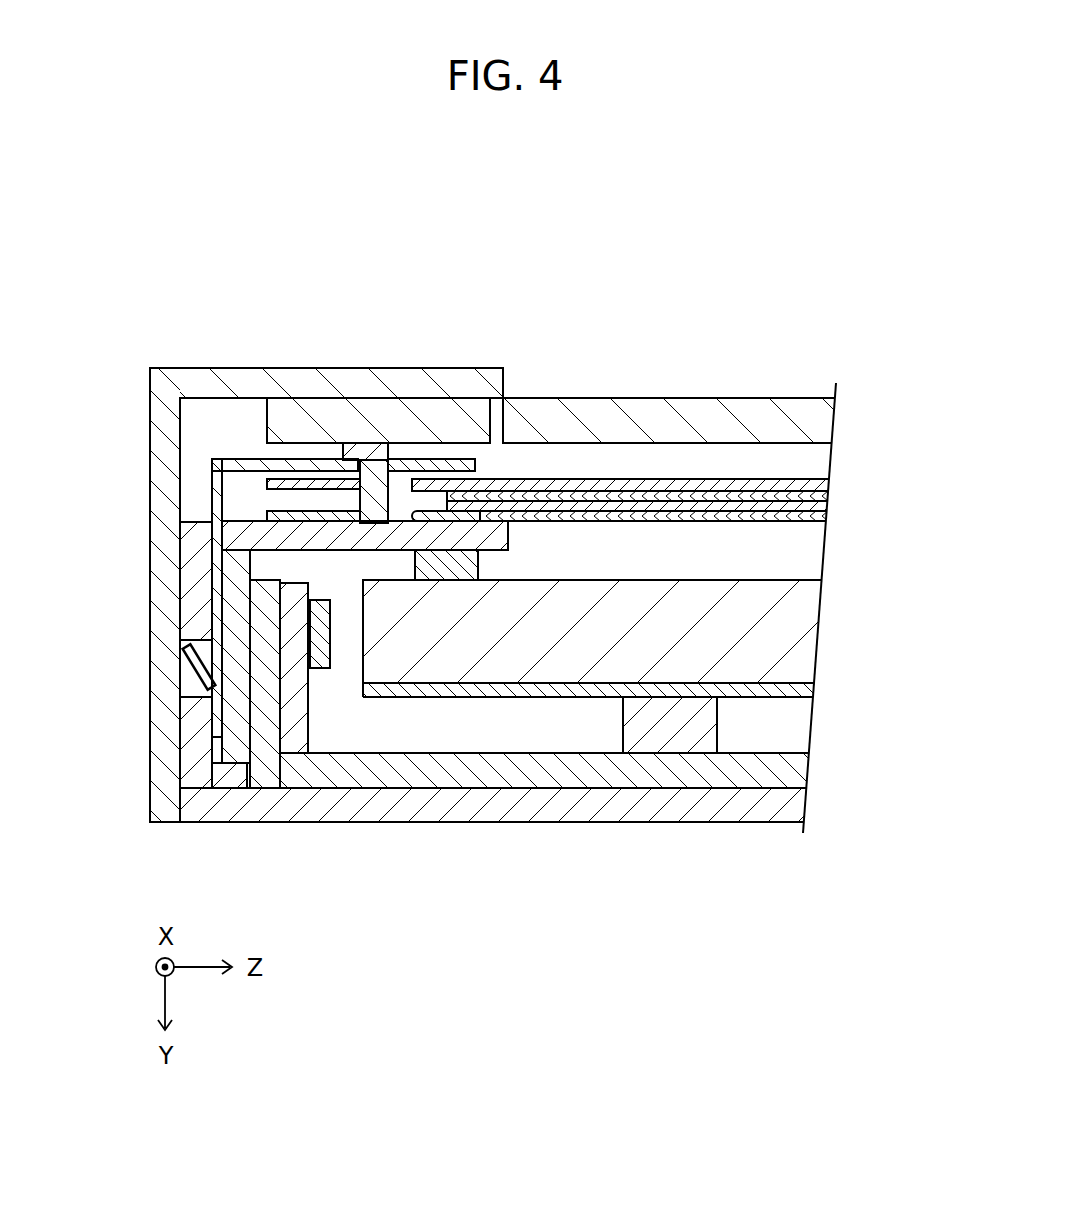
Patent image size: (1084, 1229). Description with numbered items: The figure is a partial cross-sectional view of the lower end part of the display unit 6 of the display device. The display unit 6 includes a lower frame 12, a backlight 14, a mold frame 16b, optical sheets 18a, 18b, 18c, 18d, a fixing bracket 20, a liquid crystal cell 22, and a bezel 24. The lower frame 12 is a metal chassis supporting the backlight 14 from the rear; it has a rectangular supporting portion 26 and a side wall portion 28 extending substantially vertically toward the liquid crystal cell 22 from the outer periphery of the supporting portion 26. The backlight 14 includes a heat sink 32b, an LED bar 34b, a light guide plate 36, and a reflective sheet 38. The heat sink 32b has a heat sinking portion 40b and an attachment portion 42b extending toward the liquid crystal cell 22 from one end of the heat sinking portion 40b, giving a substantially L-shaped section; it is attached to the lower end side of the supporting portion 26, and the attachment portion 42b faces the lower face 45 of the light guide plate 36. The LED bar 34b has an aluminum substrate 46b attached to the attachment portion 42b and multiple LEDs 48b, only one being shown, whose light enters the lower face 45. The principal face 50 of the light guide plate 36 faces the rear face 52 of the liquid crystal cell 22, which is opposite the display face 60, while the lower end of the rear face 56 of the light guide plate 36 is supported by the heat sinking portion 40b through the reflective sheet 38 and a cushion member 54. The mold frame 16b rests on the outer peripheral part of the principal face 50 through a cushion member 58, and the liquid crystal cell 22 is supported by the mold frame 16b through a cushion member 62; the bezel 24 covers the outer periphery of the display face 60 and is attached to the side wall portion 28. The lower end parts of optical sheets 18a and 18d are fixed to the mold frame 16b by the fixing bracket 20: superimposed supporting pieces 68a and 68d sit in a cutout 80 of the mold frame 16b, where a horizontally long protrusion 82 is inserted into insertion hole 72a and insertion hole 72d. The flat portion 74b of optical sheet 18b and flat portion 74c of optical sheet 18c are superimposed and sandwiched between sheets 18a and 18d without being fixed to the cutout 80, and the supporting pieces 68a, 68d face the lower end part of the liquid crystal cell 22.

The display unit 6 is at (693, 237).
The lower frame 12 is at (410, 805).
The backlight 14 is at (793, 723).
The mold frame 16b is at (233, 765).
The optical sheet 18a is at (757, 514).
The optical sheet 18b is at (802, 505).
The optical sheet 18c is at (800, 495).
The optical sheet 18d is at (760, 479).
The fixing bracket 20 is at (217, 493).
The liquid crystal cell 22 is at (672, 398).
The bezel 24 is at (167, 437).
The supporting portion 26 is at (567, 805).
The side wall portion 28 is at (192, 580).
The heat sink 32b is at (508, 788).
The LED bar 34b is at (292, 753).
The light guide plate 36 is at (813, 638).
The reflective sheet 38 is at (813, 692).
The heat sinking portion 40b is at (665, 788).
The attachment portion 42b is at (262, 640).
The lower face 45 is at (360, 622).
The substrate 46b is at (308, 728).
The LED 48b is at (317, 668).
The principal face 50 is at (643, 580).
The rear face 52 is at (614, 443).
The cushion member 54 is at (622, 727).
The rear face 56 is at (463, 683).
The cushion member 58 is at (480, 568).
The display face 60 is at (738, 398).
The cushion member 62 is at (377, 471).
The supporting piece 68a is at (267, 509).
The supporting piece 68d is at (307, 484).
The insertion hole 72a is at (405, 518).
The insertion hole 72d is at (410, 473).
The flat portion 74b is at (448, 498).
The flat portion 74c is at (410, 480).
The cutout 80 is at (212, 460).
The protrusion 82 is at (386, 452).